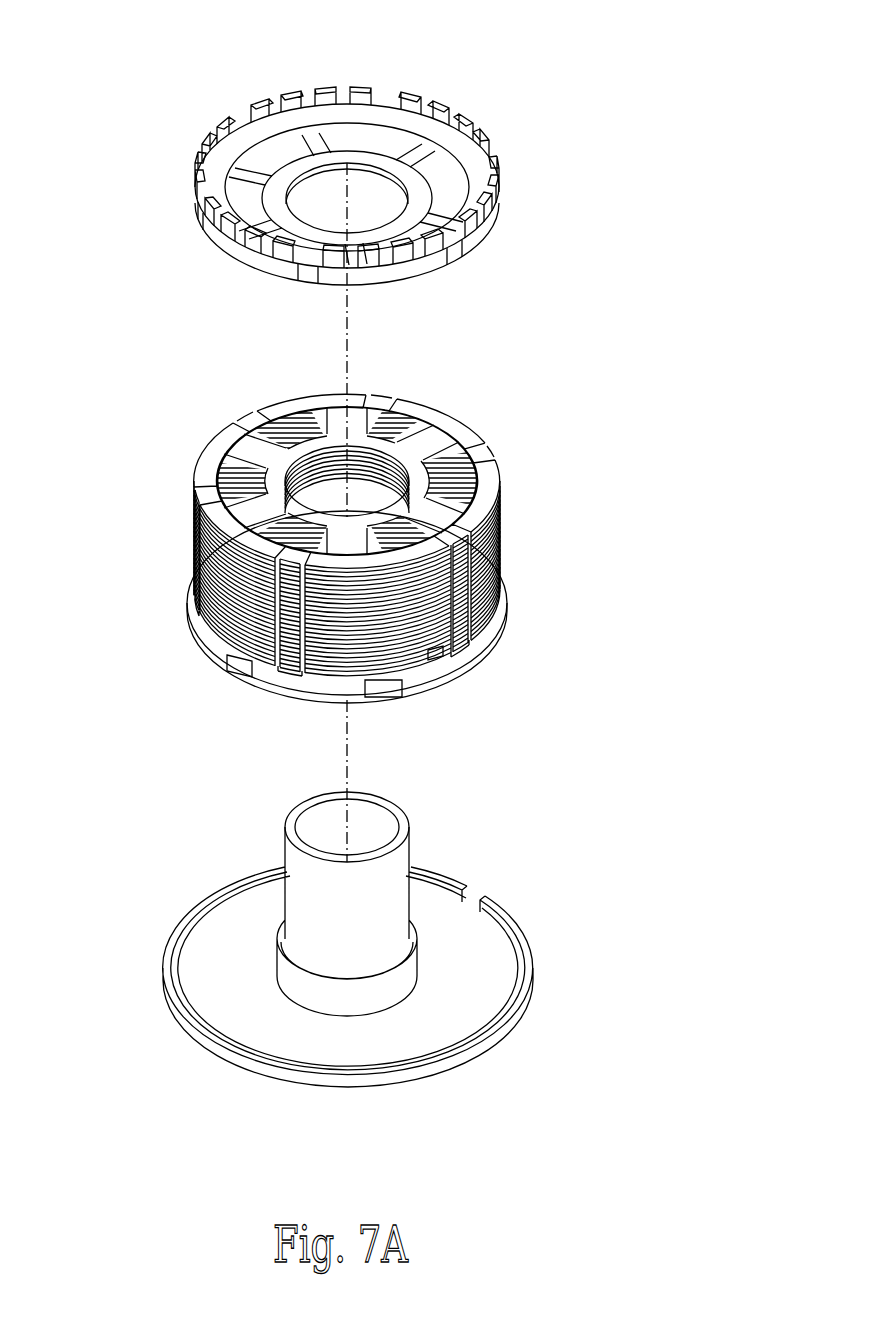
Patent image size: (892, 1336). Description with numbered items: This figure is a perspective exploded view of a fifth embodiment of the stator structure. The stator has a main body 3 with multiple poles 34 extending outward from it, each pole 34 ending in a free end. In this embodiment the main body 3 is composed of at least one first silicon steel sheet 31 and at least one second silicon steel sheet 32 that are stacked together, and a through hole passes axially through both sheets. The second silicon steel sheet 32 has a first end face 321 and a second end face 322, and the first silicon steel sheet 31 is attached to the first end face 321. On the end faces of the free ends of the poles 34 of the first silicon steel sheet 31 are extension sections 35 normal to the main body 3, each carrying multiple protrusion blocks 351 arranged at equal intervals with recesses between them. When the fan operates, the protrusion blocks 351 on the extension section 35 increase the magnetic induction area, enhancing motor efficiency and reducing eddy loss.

The main body 3 is at (574, 91).
The first silicon steel sheet 31 is at (511, 169).
The second silicon steel sheet 32 is at (511, 527).
The first end face 321 is at (213, 460).
The second end face 322 is at (213, 643).
The pole 34 is at (318, 138).
The extension section 35 is at (277, 120).
The protrusion block 351 is at (433, 100).